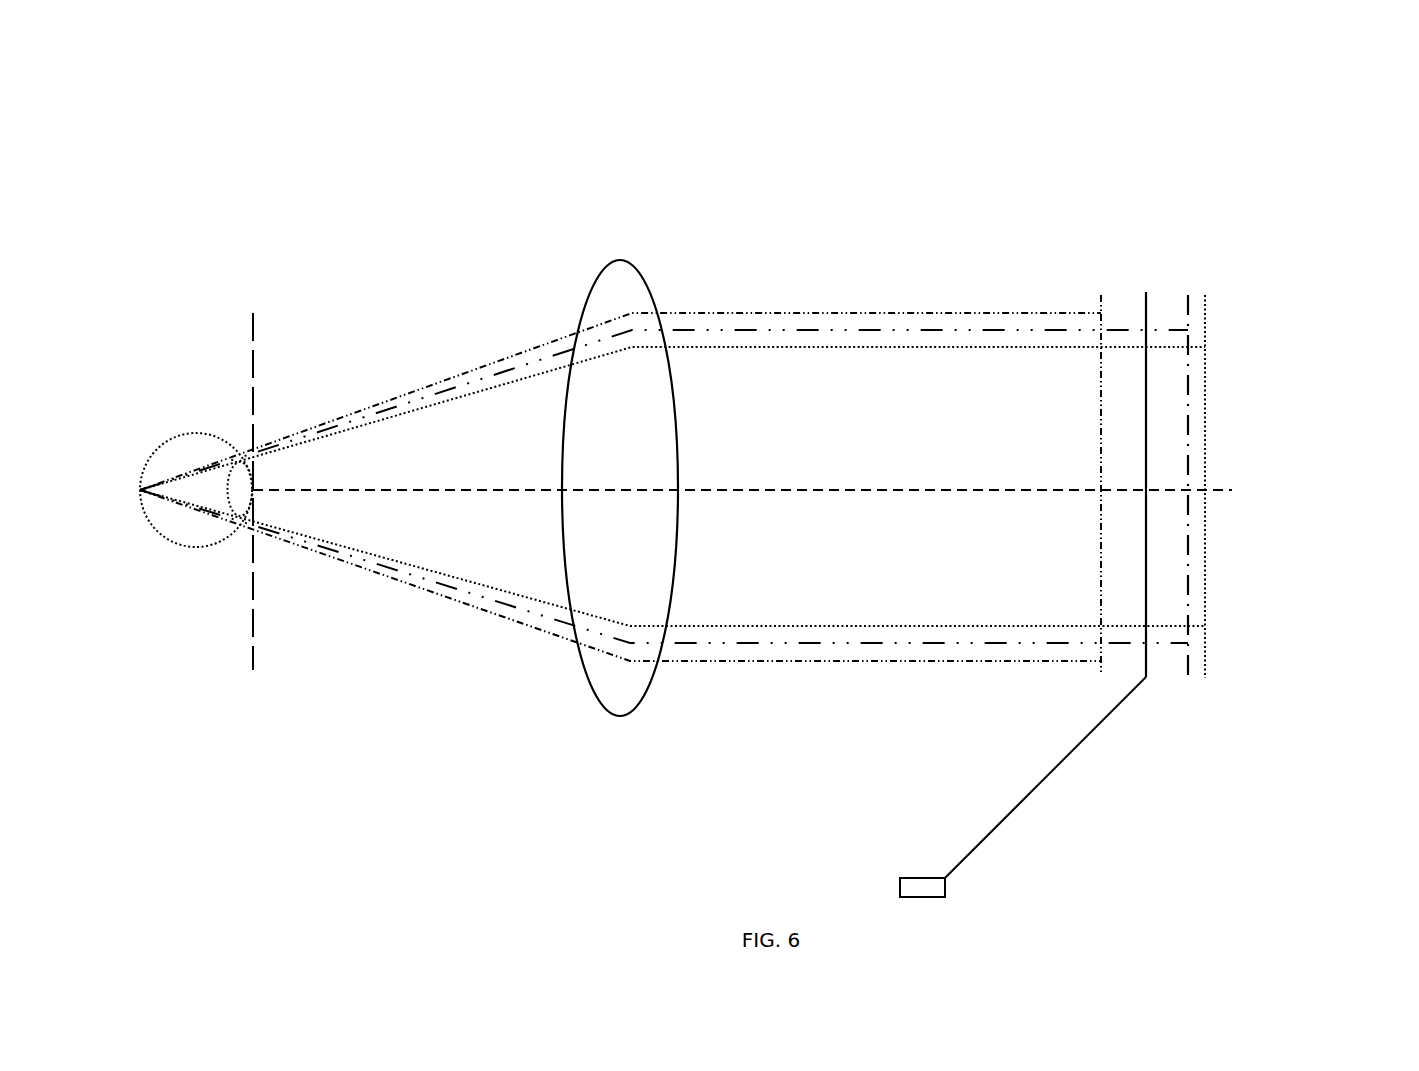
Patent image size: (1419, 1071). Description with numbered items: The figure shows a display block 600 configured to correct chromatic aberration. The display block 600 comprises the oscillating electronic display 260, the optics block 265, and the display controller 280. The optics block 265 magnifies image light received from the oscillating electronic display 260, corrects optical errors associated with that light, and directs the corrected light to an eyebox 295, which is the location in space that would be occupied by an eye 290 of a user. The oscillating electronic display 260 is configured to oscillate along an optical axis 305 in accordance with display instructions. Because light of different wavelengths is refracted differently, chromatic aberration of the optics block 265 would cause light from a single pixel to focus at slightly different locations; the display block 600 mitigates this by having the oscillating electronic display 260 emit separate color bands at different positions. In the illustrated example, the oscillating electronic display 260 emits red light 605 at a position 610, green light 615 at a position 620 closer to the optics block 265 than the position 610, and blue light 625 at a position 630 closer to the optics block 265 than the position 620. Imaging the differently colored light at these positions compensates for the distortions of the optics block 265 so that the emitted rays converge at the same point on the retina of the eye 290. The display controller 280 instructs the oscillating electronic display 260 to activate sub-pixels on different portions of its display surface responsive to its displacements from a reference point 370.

The display block 600 is at (166, 50).
The eye 290 is at (200, 433).
The eyebox 295 is at (253, 313).
The optical axis 305 is at (828, 489).
The optics block 265 is at (666, 632).
The red light 605 is at (805, 312).
The green light 615 is at (928, 330).
The blue light 625 is at (1065, 347).
The red light display position 610 is at (1100, 662).
The oscillating electronic display 260 is at (1146, 292).
The green light display position 620 is at (1188, 330).
The blue light display position 630 is at (1205, 643).
The display controller 280 is at (900, 897).
The reference point 370 is at (1146, 678).